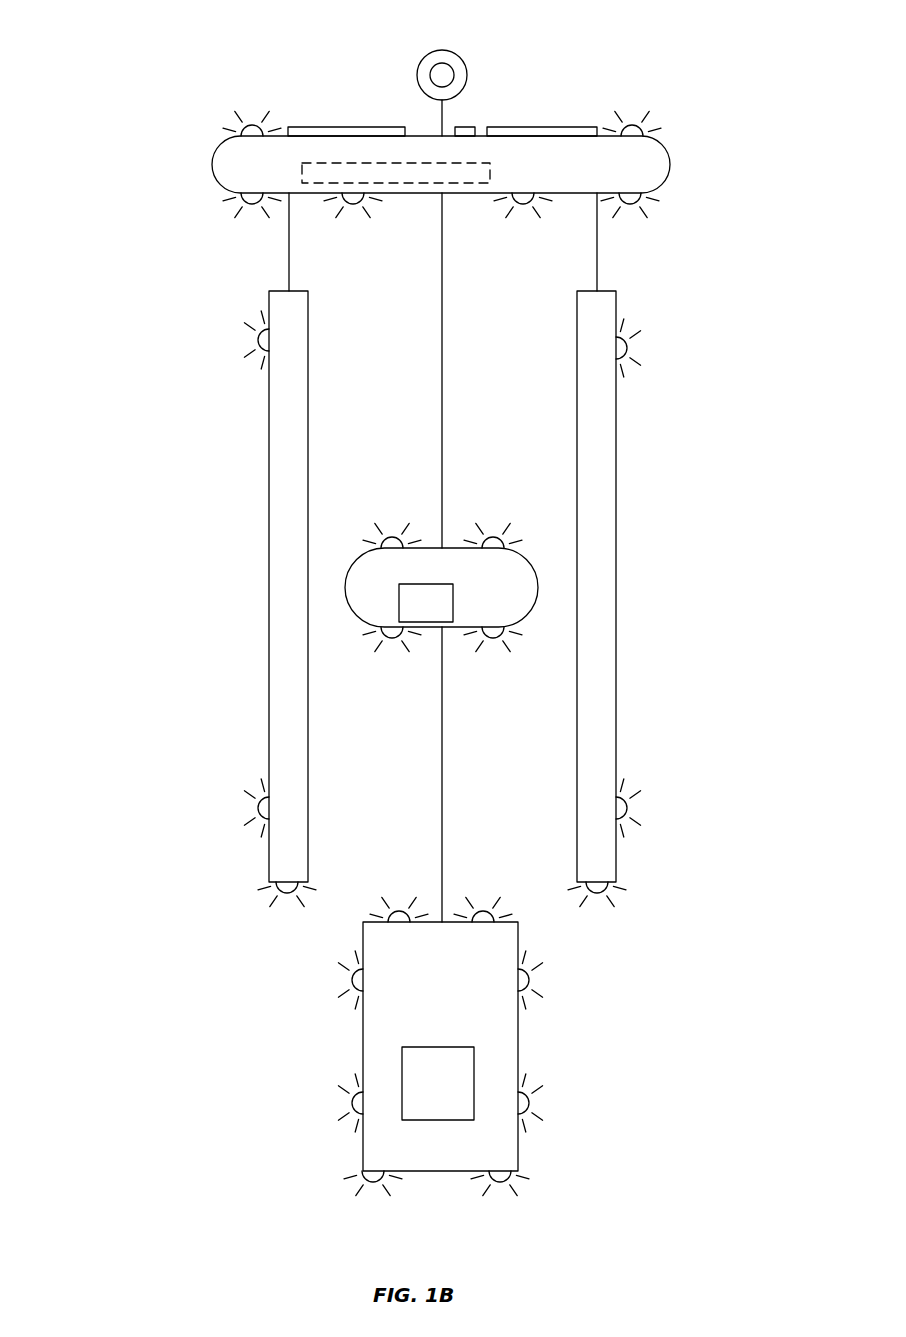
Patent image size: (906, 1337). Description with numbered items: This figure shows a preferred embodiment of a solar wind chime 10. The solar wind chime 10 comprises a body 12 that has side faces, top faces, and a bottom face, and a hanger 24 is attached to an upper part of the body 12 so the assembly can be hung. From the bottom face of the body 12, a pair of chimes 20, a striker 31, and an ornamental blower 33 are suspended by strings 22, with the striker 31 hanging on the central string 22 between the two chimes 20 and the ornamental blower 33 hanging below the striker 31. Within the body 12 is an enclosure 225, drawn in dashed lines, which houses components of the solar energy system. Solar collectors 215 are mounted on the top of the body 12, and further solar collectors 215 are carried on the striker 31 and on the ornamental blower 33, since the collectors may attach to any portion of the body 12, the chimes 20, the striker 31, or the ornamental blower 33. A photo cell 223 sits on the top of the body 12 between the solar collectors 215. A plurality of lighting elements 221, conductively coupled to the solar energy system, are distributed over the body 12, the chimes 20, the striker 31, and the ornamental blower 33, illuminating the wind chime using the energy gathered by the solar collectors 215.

The solar wind chime 10 is at (126, 83).
The body 12 is at (670, 165).
The chimes 20 is at (308, 443).
The strings 22 is at (289, 278).
The hanger 24 is at (466, 62).
The striker 31 is at (453, 548).
The ornamental blower 33 is at (518, 1048).
The solar collectors 215 is at (345, 127).
The lighting elements 221 is at (252, 118).
The photo cells 223 is at (463, 127).
The enclosure 225 is at (490, 173).